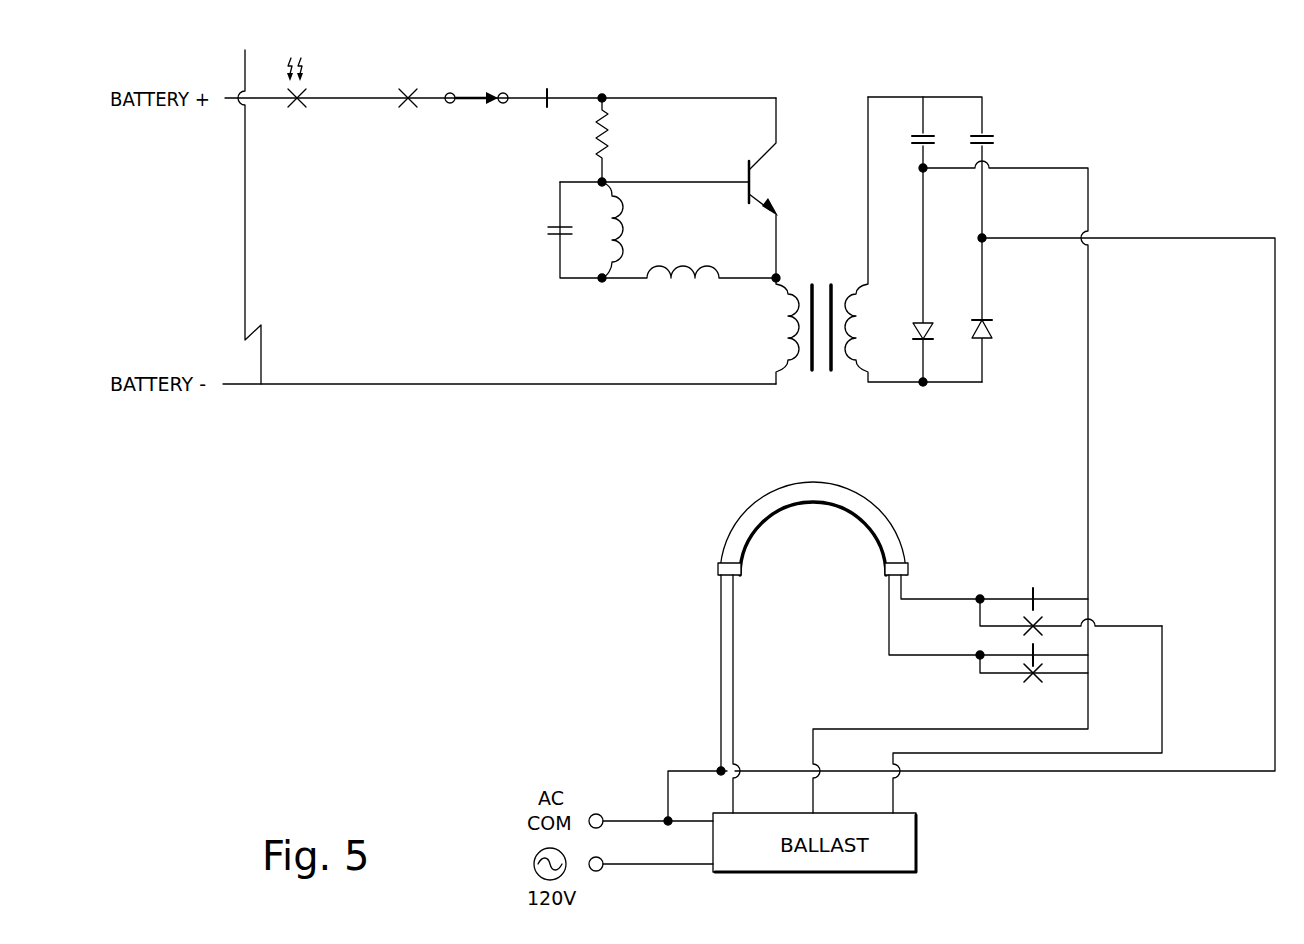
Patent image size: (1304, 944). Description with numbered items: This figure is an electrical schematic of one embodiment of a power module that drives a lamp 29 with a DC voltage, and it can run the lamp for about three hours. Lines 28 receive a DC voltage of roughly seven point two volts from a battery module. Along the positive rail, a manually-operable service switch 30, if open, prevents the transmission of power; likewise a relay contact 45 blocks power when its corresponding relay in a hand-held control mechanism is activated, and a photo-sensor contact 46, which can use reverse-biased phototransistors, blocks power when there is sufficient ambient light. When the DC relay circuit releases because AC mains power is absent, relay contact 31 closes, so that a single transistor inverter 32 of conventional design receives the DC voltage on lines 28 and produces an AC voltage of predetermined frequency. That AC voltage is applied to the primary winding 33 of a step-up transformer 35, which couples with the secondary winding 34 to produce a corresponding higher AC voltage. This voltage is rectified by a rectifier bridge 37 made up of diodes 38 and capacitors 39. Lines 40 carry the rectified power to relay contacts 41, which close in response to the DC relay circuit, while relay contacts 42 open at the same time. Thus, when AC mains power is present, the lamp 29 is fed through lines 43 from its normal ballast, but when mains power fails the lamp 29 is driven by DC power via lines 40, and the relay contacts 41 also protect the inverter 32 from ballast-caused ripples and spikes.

The lines 28 is at (263, 90).
The lamp 29 is at (768, 492).
The manually-operable service switch 30 is at (494, 95).
The relay contact 31 is at (585, 77).
The single transistor inverter 32 is at (780, 80).
The primary winding 33 is at (785, 400).
The secondary winding 34 is at (878, 402).
The step-up transformer 35 is at (822, 283).
The rectifier bridge 37 is at (944, 84).
The diodes 38 is at (926, 322).
The capacitors 39 is at (984, 131).
The lines 40 is at (1088, 180).
The relay contacts 41 is at (1030, 650).
The relay contacts 42 is at (1038, 628).
The lines 43 is at (912, 598).
The relay contact 45 is at (404, 92).
The photo-sensor contact 46 is at (306, 104).